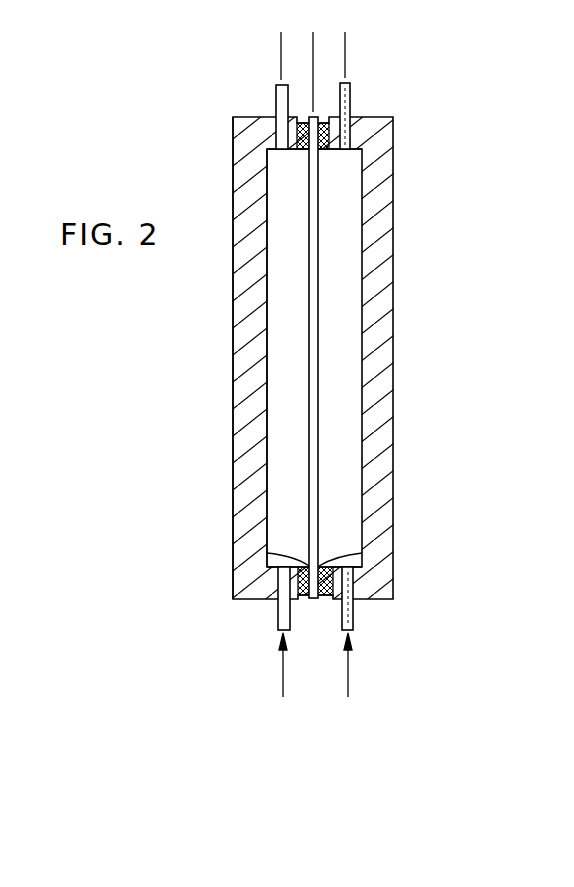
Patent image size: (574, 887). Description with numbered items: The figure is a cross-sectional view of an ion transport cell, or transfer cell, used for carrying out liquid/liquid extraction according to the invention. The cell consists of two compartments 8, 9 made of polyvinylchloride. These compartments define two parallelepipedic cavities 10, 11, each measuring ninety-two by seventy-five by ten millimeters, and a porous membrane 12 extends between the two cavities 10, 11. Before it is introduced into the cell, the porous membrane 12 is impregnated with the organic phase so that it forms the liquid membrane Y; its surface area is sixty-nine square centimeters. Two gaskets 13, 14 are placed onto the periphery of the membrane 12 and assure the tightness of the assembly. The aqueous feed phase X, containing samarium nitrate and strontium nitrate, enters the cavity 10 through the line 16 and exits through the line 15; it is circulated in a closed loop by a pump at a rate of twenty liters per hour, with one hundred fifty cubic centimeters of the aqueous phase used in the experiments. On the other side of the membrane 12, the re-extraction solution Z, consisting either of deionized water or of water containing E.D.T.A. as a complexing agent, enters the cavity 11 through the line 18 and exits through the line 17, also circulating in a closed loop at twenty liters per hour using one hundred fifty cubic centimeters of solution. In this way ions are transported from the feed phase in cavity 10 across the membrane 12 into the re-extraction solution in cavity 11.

The compartment 8 is at (393, 498).
The compartment 9 is at (238, 517).
The cavity 10 is at (343, 442).
The cavity 11 is at (287, 473).
The porous membrane 12 is at (318, 252).
The gasket 13 is at (362, 553).
The gasket 14 is at (267, 554).
The line 15 is at (348, 98).
The line 16 is at (353, 617).
The line 17 is at (276, 100).
The line 18 is at (278, 617).